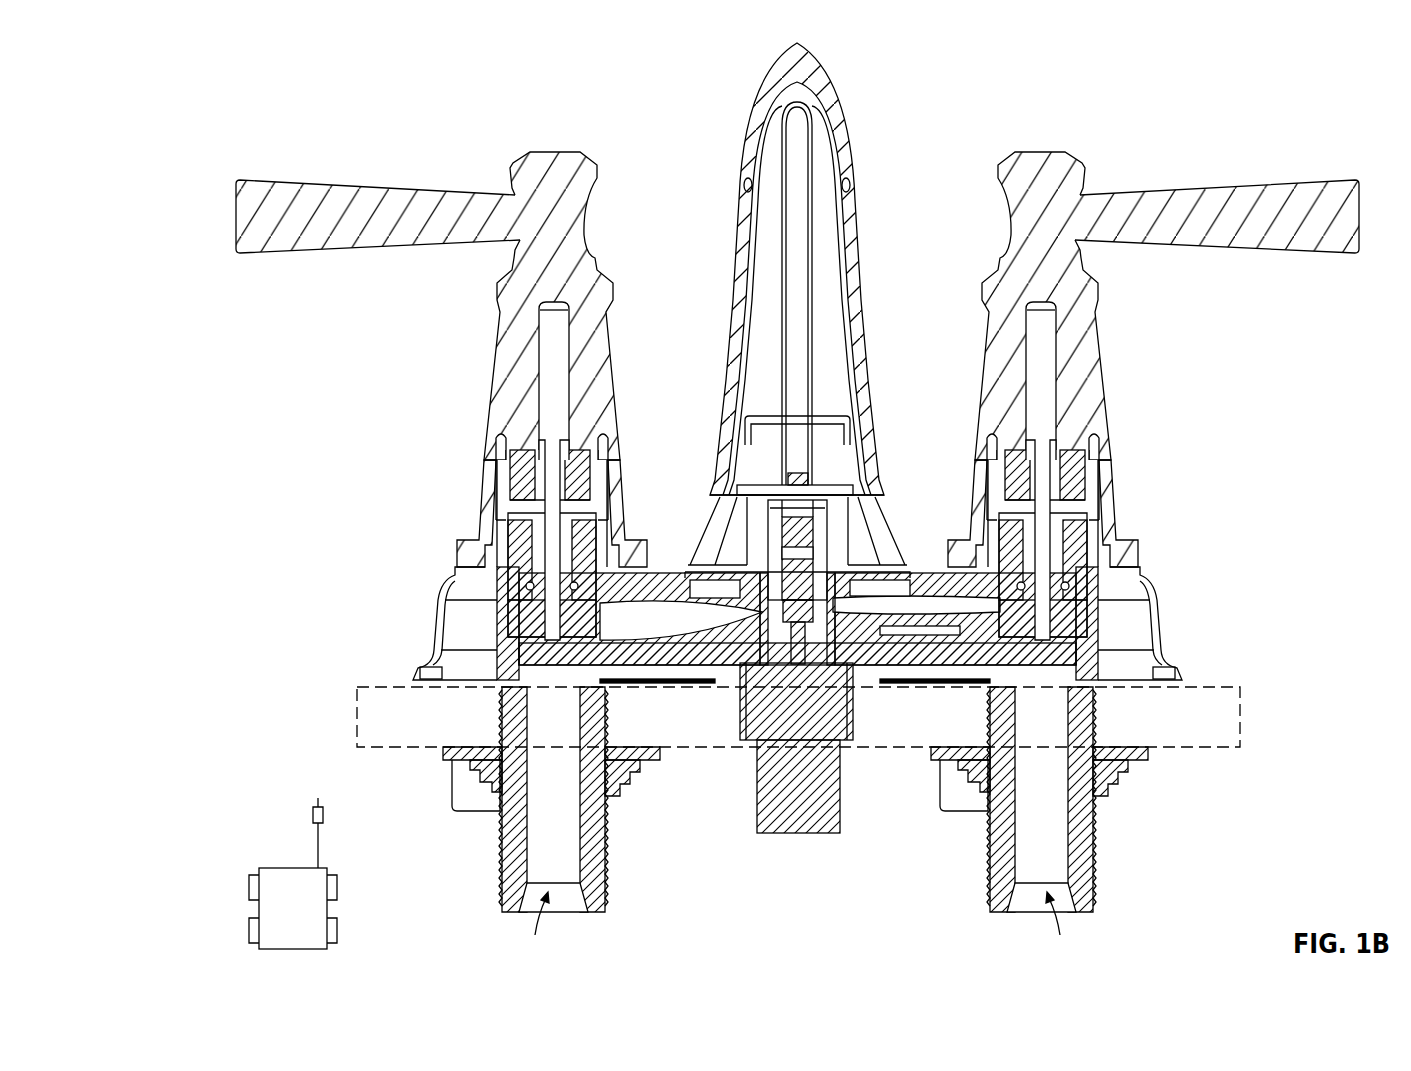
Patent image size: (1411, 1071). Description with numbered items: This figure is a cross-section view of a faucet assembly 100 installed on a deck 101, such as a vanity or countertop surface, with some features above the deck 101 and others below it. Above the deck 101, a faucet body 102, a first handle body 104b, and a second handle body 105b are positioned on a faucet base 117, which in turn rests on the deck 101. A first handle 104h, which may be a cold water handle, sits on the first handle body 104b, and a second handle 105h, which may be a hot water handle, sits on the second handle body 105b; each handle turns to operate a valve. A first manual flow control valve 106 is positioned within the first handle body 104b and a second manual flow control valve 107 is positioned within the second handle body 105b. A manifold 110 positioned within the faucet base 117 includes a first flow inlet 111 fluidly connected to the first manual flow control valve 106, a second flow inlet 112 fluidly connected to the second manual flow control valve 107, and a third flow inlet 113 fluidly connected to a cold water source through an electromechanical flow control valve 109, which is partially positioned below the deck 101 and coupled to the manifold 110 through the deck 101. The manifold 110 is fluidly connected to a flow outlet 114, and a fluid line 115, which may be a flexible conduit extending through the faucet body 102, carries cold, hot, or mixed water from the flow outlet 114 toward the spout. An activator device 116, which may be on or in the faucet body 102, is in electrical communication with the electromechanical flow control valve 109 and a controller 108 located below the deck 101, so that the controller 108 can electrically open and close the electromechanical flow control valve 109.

The faucet assembly 100 is at (1165, 103).
The deck 101 is at (357, 707).
The faucet body 102 is at (732, 272).
The first handle body 104b is at (1106, 375).
The first handle 104h is at (1272, 182).
The second handle body 105b is at (490, 395).
The second handle 105h is at (363, 184).
The first manual flow control valve 106 is at (1122, 522).
The second manual flow control valve 107 is at (470, 517).
The controller 108 is at (259, 905).
The electromechanical flow control valve 109 is at (800, 818).
The manifold 110 is at (728, 650).
The first flow inlet 111 is at (905, 605).
The second flow inlet 112 is at (646, 625).
The third flow inlet 113 is at (925, 653).
The flow outlet 114 is at (818, 548).
The fluid line 115 is at (790, 457).
The activator device 116 is at (828, 462).
The faucet base 117 is at (1163, 637).